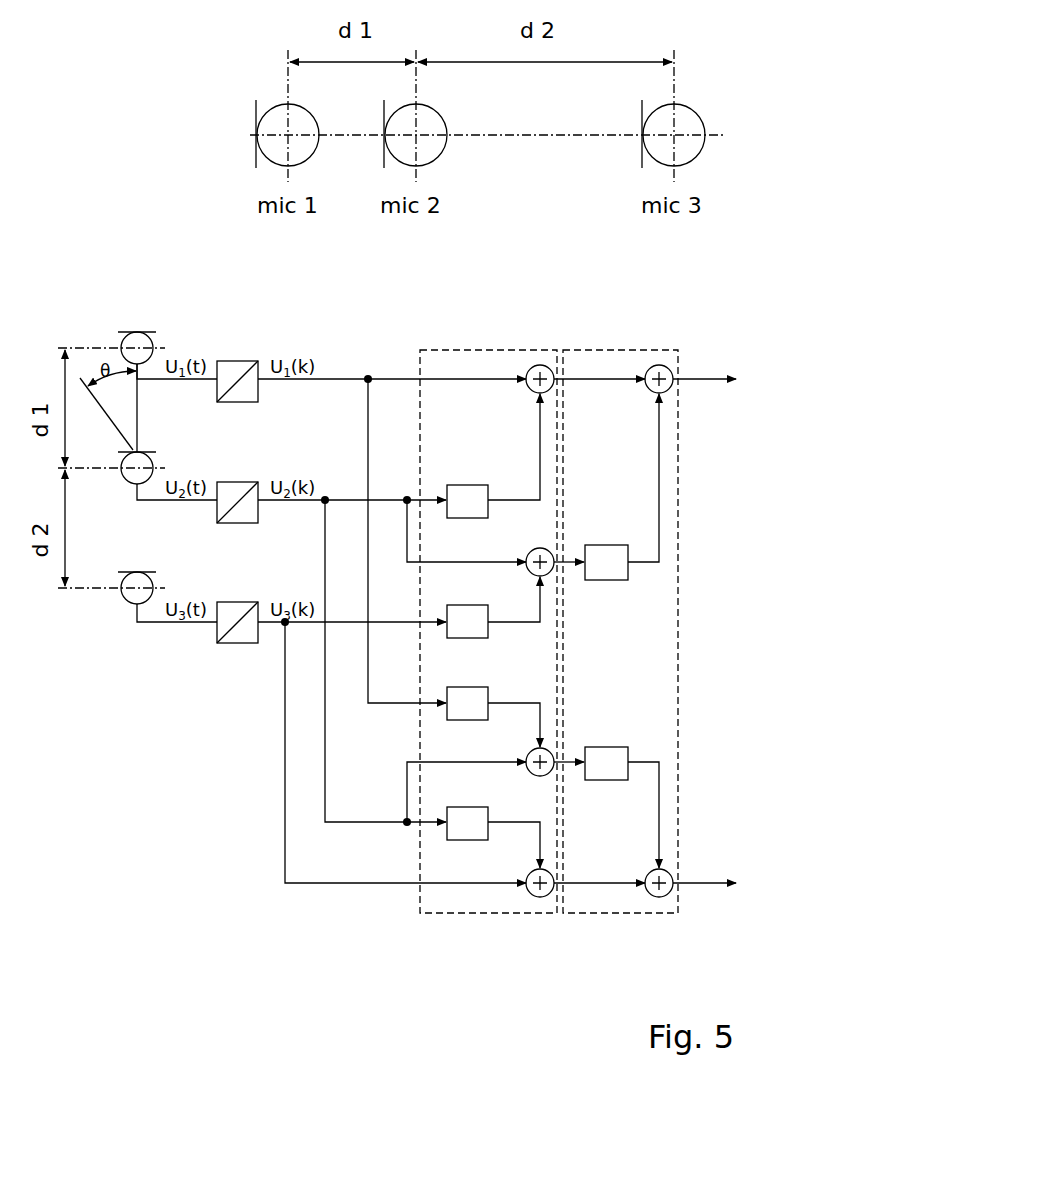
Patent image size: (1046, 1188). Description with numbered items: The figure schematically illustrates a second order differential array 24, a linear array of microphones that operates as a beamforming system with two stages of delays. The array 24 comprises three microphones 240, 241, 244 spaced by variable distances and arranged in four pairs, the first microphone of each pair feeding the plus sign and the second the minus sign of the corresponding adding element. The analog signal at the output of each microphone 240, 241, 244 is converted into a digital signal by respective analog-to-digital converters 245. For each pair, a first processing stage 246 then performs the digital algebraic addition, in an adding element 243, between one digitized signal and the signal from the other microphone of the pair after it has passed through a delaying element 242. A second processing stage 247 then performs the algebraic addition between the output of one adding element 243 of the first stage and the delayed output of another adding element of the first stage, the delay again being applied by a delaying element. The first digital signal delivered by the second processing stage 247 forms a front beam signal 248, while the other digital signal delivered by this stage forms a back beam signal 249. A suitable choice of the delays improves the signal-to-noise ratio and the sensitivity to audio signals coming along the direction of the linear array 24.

The linear array of microphones 24 is at (151, 848).
The microphone 240 is at (305, 125).
The microphone 241 is at (433, 125).
The microphone 244 is at (690, 126).
The analog-to-digital converters 245 is at (237, 362).
The delaying element 242 is at (493, 631).
The adding element 243 is at (553, 390).
The first processing stage 246 is at (473, 350).
The second processing stage 247 is at (622, 350).
The front beam signal 248 is at (731, 382).
The back beam signal 249 is at (731, 885).